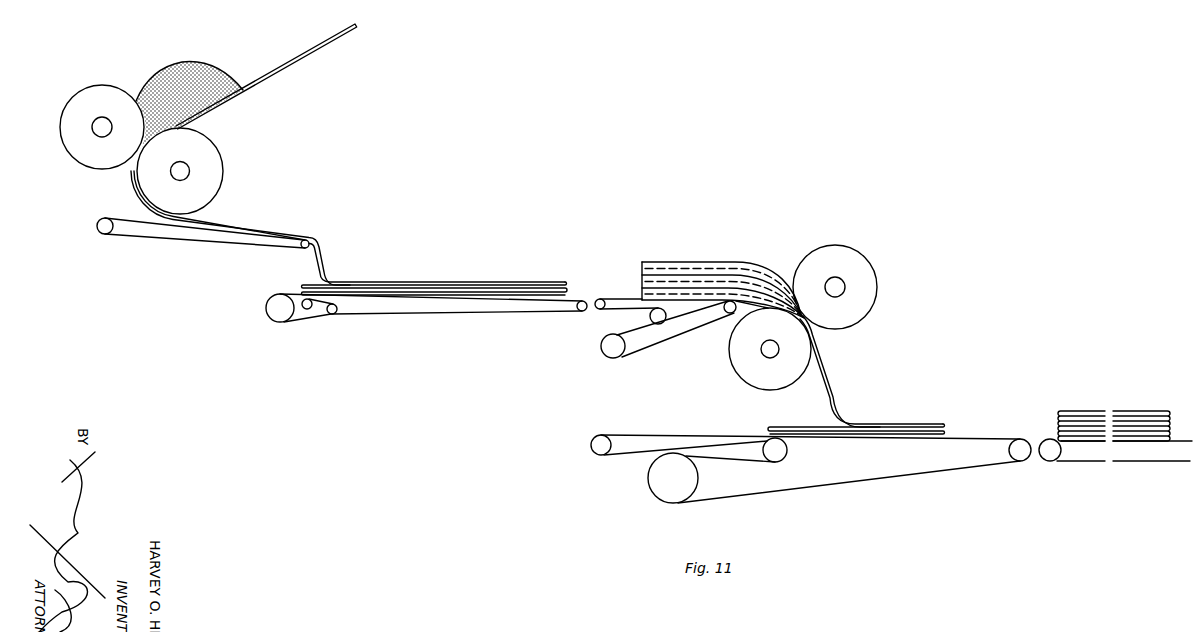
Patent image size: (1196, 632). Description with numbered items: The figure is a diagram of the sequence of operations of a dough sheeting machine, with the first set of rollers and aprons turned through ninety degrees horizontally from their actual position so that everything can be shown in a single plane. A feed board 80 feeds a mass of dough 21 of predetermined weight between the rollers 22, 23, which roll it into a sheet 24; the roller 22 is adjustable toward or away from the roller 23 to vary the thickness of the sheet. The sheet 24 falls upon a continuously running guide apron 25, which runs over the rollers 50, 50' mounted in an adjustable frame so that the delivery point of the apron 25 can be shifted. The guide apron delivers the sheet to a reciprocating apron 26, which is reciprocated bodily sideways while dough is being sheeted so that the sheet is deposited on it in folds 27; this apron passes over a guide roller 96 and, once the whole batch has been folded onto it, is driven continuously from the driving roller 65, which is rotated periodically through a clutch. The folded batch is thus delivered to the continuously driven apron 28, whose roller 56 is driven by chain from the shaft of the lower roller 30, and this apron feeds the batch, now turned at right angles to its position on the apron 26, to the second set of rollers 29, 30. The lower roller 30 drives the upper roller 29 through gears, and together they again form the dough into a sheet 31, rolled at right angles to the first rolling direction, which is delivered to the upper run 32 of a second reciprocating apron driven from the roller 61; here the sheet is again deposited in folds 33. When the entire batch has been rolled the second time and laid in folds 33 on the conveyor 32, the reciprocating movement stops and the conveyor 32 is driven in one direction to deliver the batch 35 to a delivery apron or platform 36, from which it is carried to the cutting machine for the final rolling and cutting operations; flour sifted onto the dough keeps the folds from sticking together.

The mass of dough 21 is at (212, 62).
The roller 22 is at (78, 147).
The roller 23 is at (158, 183).
The feed board 80 is at (284, 72).
The sheet 24 is at (214, 226).
The guide apron 25 is at (208, 245).
The roller 50 is at (88, 234).
The roller 50' is at (289, 254).
The folds 27 is at (385, 290).
The reciprocating apron 26 is at (421, 304).
The driving roller 65 is at (282, 322).
The guide roller 96 is at (582, 313).
The apron 28 is at (627, 311).
The roller 56 is at (613, 350).
The roller 29 is at (853, 303).
The roller 30 is at (787, 357).
The sheet 31 is at (833, 397).
The folds 33 is at (910, 428).
The upper run of reciprocating apron 32 is at (702, 433).
The roller 61 is at (668, 493).
The batch 35 is at (1098, 393).
The delivery apron 36 is at (1095, 464).